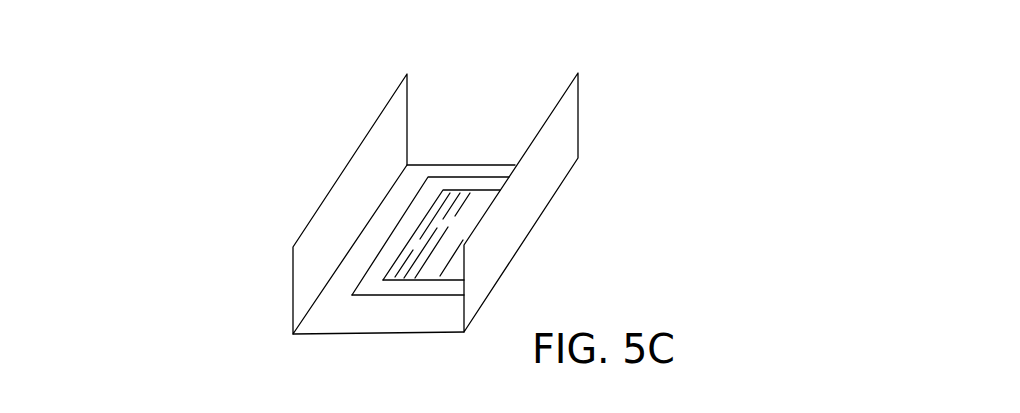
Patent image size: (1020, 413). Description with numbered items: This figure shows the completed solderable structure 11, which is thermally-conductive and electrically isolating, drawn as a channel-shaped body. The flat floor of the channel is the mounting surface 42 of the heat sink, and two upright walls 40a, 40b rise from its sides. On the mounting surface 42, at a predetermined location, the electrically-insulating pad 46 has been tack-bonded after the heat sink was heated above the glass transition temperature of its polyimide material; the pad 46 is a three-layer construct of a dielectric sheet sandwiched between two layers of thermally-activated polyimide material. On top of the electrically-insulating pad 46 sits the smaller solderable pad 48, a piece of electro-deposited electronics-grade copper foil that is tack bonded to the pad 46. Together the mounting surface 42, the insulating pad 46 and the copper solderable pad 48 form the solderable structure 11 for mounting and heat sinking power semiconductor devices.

The solderable structure 11 is at (261, 260).
The first side wall 40a is at (305, 240).
The second side wall 40b is at (573, 118).
The mounting surface 42 is at (332, 325).
The electrically-insulating pad 46 is at (452, 177).
The solderable pad 48 is at (485, 188).